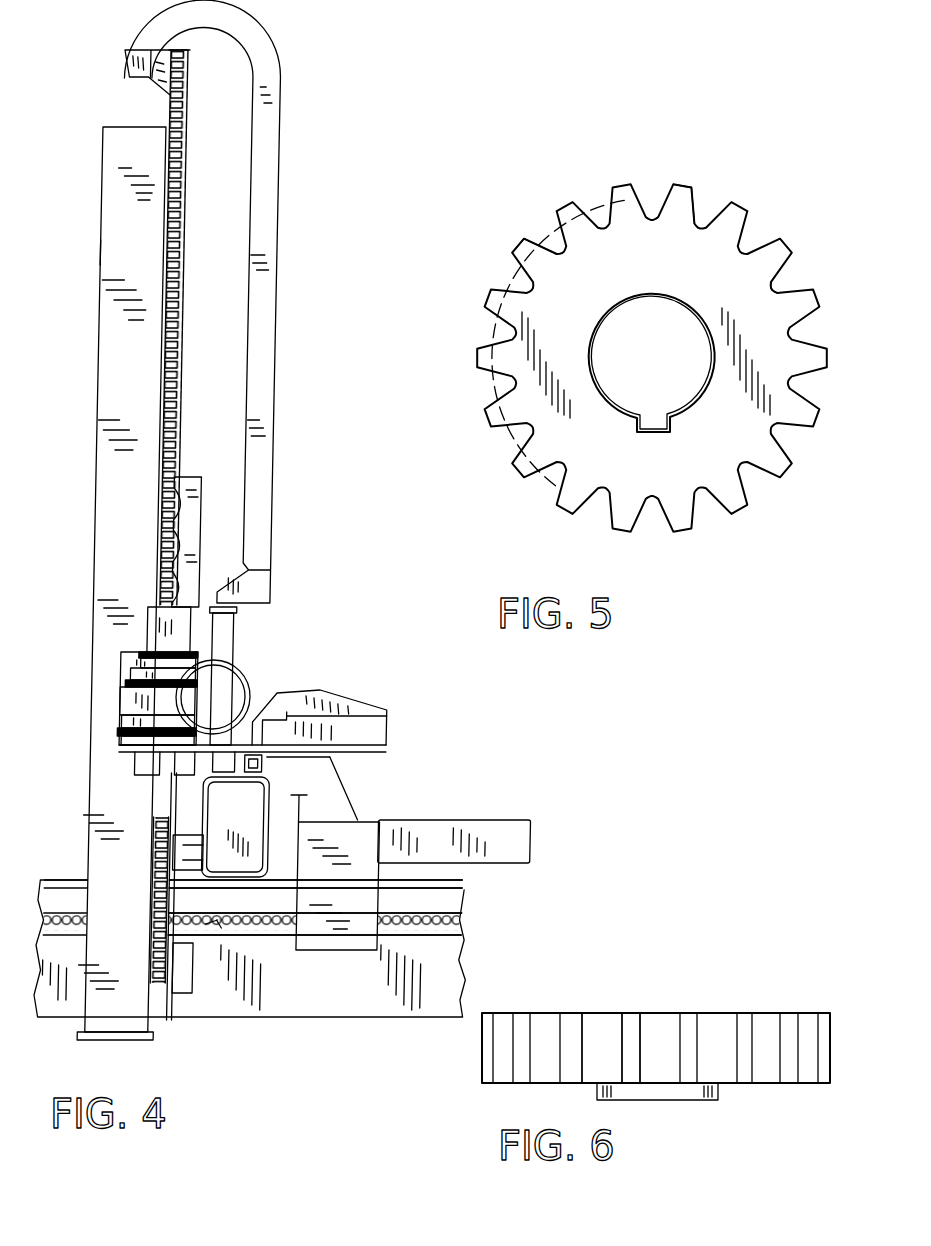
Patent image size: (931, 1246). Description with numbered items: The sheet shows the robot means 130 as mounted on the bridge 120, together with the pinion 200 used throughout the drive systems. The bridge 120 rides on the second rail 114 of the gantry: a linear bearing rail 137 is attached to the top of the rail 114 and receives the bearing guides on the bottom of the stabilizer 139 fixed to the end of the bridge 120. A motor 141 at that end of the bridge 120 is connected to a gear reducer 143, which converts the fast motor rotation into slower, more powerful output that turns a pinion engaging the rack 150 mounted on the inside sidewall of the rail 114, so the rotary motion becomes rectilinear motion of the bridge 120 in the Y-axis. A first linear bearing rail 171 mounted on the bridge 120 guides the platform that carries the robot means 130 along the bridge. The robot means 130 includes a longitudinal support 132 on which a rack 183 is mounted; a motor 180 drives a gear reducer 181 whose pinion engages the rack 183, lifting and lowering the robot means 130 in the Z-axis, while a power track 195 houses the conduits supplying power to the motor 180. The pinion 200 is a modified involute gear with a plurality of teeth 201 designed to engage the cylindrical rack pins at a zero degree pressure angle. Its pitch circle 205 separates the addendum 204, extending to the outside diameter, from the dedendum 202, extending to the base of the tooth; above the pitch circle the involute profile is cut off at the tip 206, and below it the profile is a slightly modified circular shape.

In FIG. 4, the second rail 114 is at (325, 1000).
In FIG. 4, the bridge 120 is at (212, 822).
In FIG. 4, the robot means 130 is at (100, 258).
In FIG. 4, the longitudinal support 132 is at (118, 193).
In FIG. 4, the linear bearing rail 137 is at (455, 890).
In FIG. 4, the stabilizer 139 is at (350, 783).
In FIG. 4, the motor 141 is at (448, 828).
In FIG. 4, the gear reducer 143 is at (363, 833).
In FIG. 4, the rack 150 is at (455, 915).
In FIG. 4, the first linear bearing rail 171 is at (270, 768).
In FIG. 4, the motor 180 is at (197, 510).
In FIG. 4, the gear reducer 181 is at (137, 668).
In FIG. 4, the rack 183 is at (160, 333).
In FIG. 4, the power track 195 is at (277, 50).
In FIG. 5, the pinion 200 is at (652, 178).
In FIG. 6, the pinion 200 is at (733, 974).
In FIG. 5, the teeth 201 is at (520, 238).
In FIG. 5, the dedendum 202 is at (700, 225).
In FIG. 6, the dedendum 202 is at (658, 1030).
In FIG. 5, the addendum 204 is at (690, 190).
In FIG. 6, the addendum 204 is at (650, 1020).
In FIG. 5, the pitch circle 205 is at (593, 207).
In FIG. 5, the tip 206 is at (785, 238).
In FIG. 6, the tip 206 is at (630, 1043).